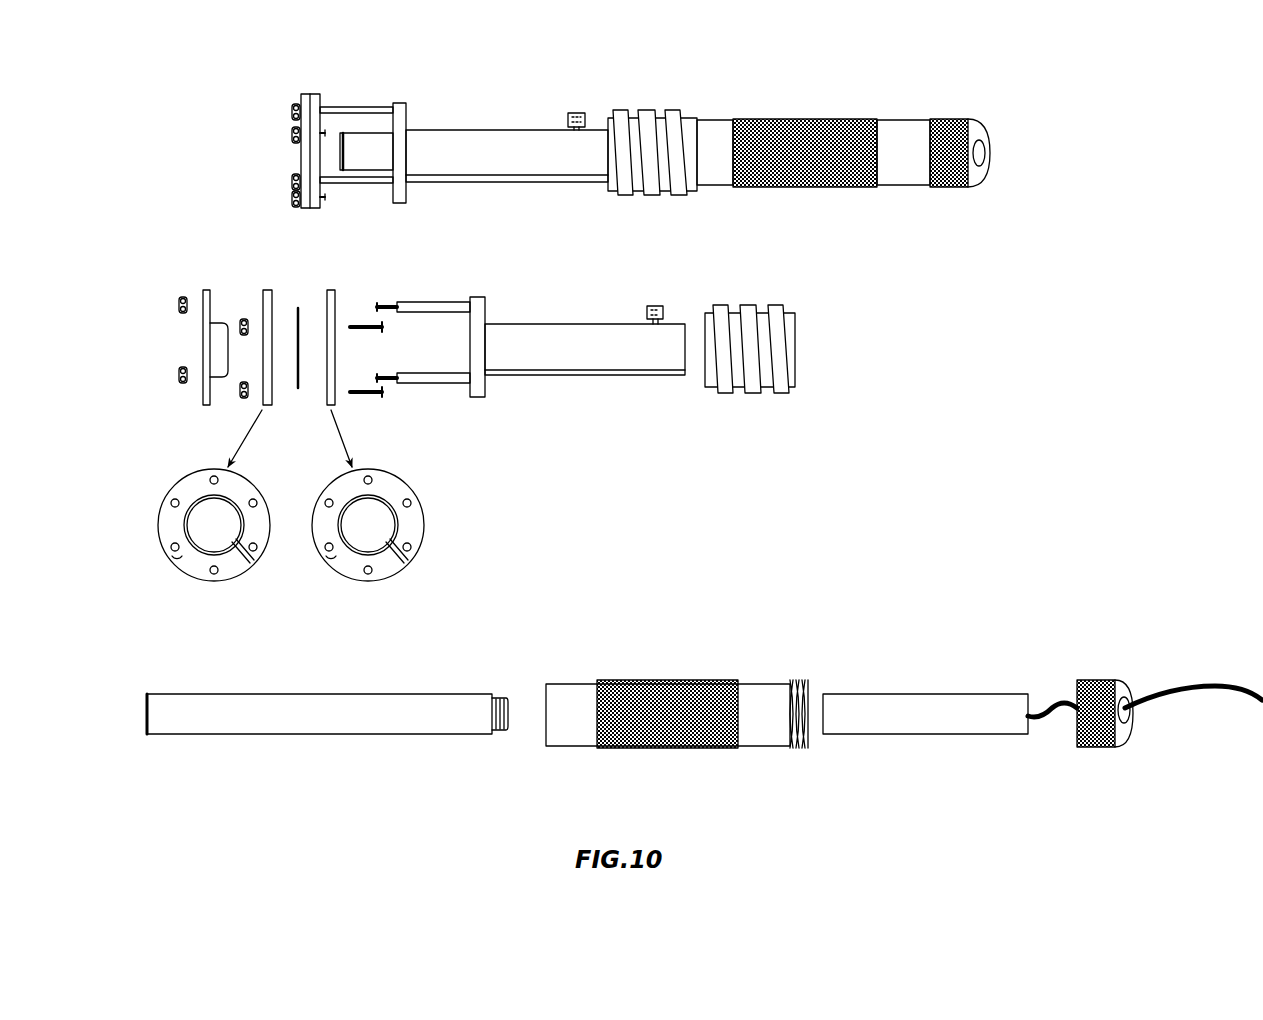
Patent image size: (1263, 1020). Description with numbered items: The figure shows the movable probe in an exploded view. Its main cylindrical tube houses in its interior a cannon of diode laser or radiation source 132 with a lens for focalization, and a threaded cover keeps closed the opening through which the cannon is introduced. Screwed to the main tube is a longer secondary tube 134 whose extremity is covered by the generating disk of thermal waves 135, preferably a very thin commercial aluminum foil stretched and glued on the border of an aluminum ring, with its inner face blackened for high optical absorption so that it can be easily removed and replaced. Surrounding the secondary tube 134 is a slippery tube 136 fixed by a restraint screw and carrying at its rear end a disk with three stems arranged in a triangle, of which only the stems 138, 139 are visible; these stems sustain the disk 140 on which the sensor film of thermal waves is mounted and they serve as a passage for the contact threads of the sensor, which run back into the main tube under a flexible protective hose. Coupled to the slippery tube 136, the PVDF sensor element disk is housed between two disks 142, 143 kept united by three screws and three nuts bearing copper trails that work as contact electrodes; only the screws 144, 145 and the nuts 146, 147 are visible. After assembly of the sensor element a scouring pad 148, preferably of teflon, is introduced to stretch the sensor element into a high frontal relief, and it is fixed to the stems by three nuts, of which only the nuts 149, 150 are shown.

The cannon of diode laser or radiation source 132 is at (895, 680).
The longer secondary tube 134 is at (272, 743).
The generating disk of thermal waves 135 is at (140, 698).
The slippery tube 136 is at (536, 322).
The stem 138 is at (438, 297).
The stem 139 is at (447, 392).
The disk 140 is at (302, 90).
The disk 142 is at (200, 584).
The disk 143 is at (382, 582).
The screw 144 is at (366, 321).
The screw 145 is at (371, 400).
The nut 146 is at (243, 413).
The nut 147 is at (243, 316).
The scouring pad 148 is at (206, 286).
The nut 149 is at (175, 305).
The nut 150 is at (175, 375).